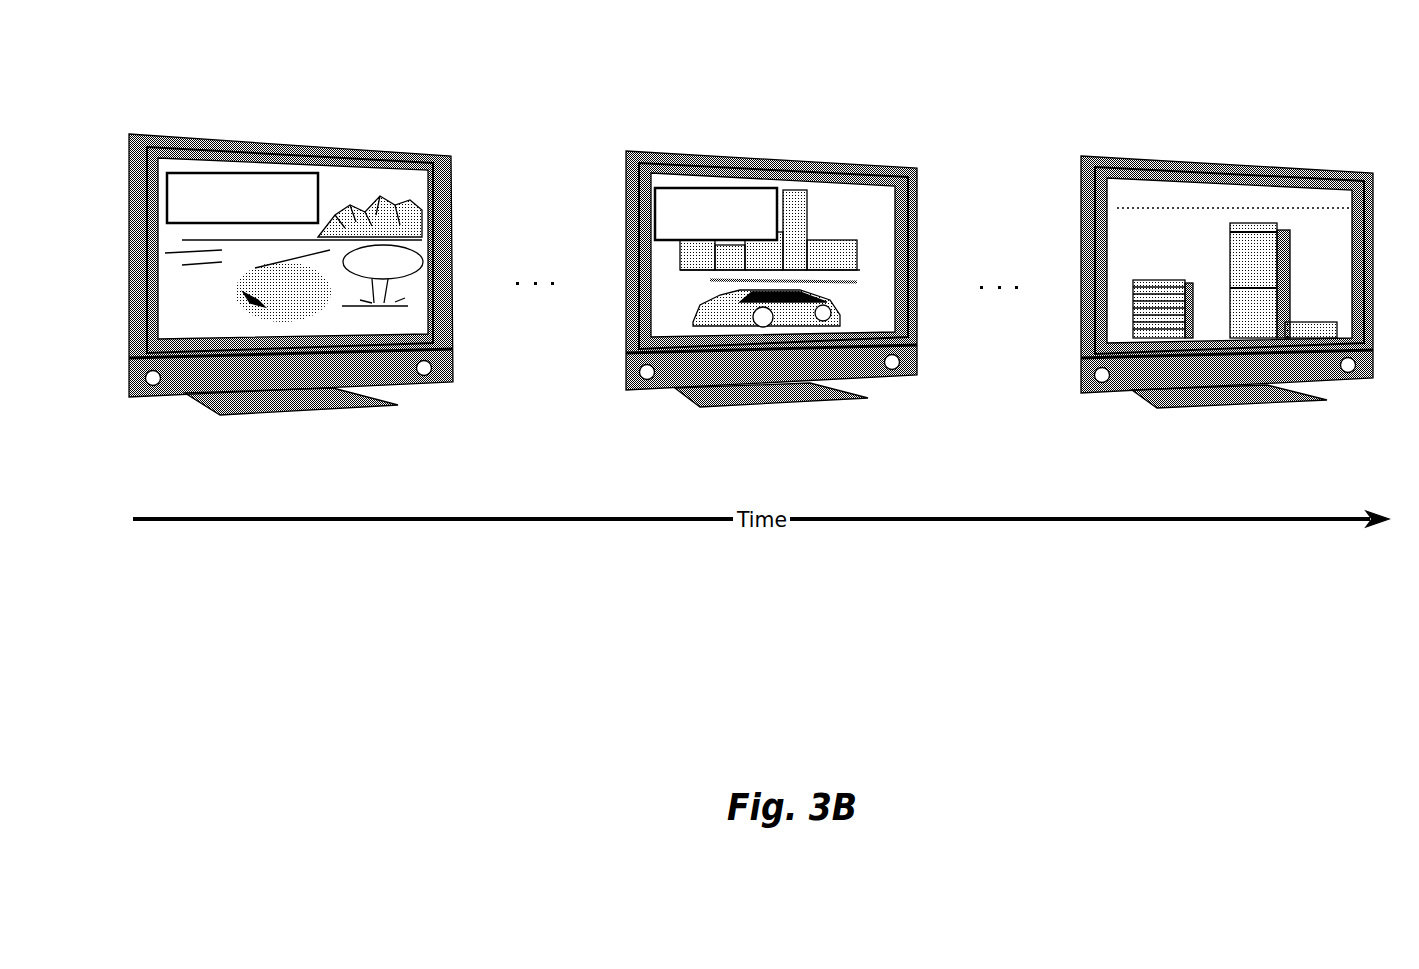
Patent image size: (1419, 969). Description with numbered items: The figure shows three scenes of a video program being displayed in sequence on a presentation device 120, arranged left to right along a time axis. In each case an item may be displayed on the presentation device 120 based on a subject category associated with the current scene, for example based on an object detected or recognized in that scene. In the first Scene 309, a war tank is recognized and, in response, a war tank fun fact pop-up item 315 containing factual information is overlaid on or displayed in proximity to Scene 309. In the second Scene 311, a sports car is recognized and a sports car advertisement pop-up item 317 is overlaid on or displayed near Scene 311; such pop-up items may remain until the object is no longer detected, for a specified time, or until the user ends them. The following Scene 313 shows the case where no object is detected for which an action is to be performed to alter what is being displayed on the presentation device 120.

The presentation device 120 is at (450, 232).
The Scene 309 is at (403, 190).
The Scene 311 is at (875, 202).
The Scene 313 is at (1325, 205).
The war tank fun fact pop-up item 315 is at (220, 173).
The sports car advertisement pop-up item 317 is at (660, 213).